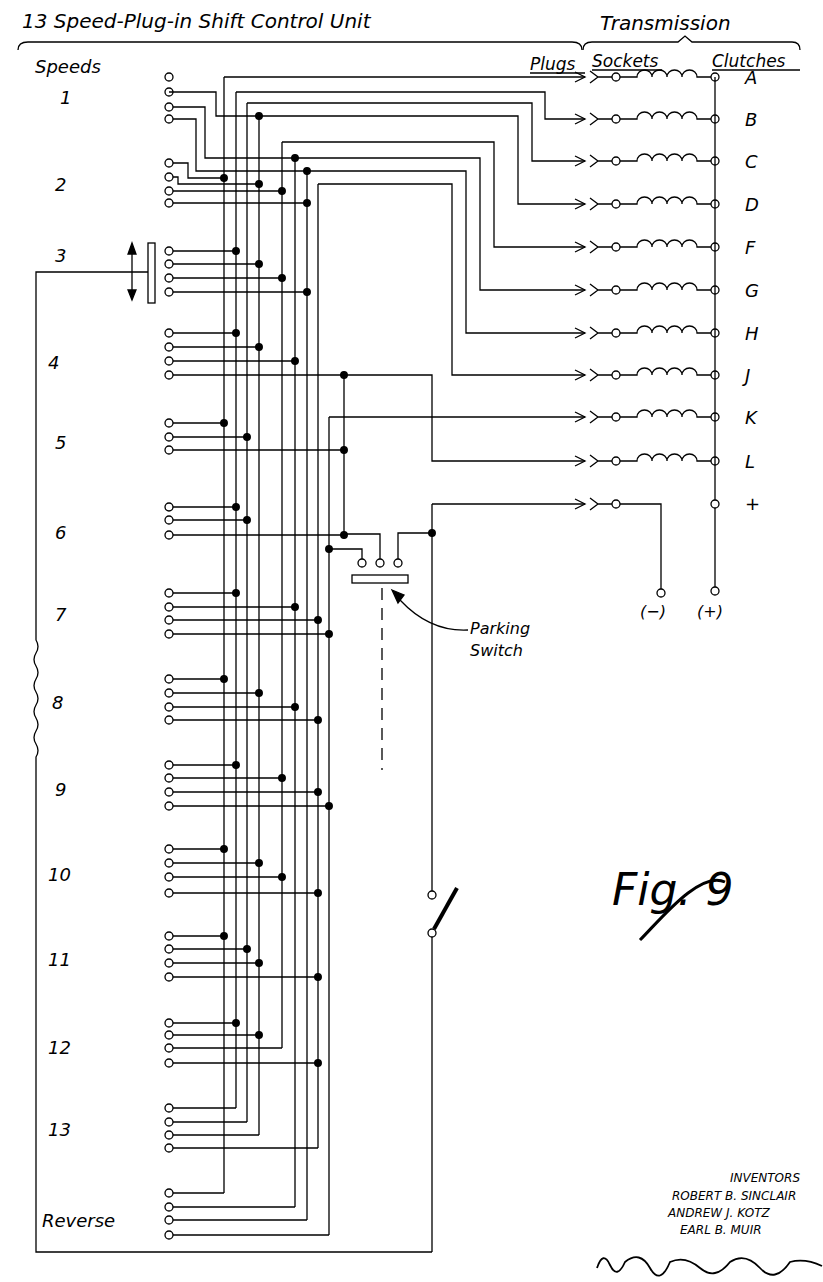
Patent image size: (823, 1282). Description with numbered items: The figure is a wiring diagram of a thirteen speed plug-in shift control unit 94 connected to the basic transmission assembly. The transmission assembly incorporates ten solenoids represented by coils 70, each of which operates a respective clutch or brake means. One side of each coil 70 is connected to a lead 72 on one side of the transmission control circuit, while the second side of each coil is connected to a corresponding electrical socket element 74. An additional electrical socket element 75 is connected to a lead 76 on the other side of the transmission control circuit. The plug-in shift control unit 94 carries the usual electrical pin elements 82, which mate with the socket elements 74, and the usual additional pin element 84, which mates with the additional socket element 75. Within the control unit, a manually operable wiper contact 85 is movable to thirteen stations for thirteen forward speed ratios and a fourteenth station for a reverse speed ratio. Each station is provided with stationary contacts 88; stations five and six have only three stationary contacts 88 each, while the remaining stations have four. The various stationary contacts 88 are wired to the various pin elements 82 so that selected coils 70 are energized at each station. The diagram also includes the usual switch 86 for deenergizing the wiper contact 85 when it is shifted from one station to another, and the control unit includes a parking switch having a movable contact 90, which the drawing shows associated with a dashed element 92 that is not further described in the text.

The coil 70 is at (673, 80).
The lead 72 is at (715, 552).
The electrical socket element 74 is at (598, 160).
The additional electrical socket element 75 is at (600, 508).
The lead 76 is at (661, 563).
The electrical pin element 82 is at (573, 153).
The additional pin element 84 is at (583, 510).
The wiper contact 85 is at (151, 305).
The switch 86 is at (449, 911).
The stationary contacts 88 is at (163, 535).
The movable contact 90 is at (408, 578).
The parking switch linkage 92 is at (382, 724).
The plug-in shift control unit 94 is at (300, 630).